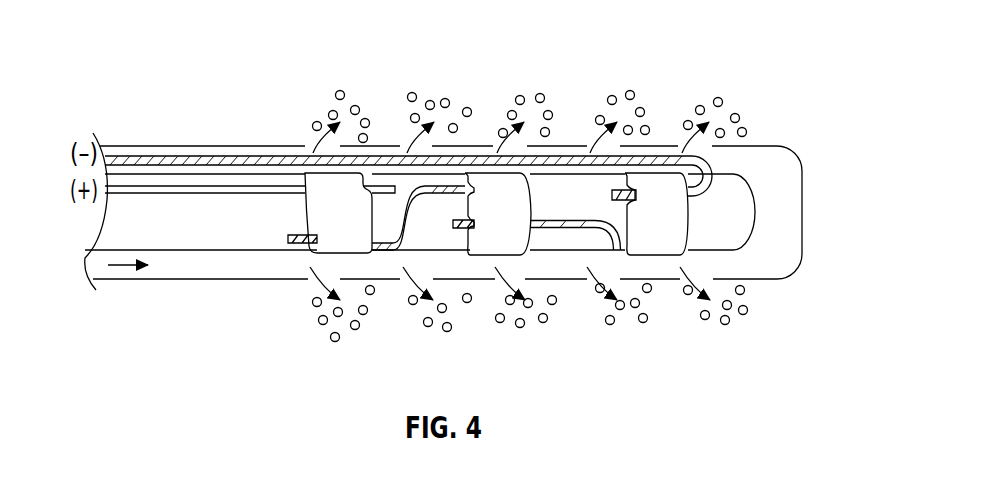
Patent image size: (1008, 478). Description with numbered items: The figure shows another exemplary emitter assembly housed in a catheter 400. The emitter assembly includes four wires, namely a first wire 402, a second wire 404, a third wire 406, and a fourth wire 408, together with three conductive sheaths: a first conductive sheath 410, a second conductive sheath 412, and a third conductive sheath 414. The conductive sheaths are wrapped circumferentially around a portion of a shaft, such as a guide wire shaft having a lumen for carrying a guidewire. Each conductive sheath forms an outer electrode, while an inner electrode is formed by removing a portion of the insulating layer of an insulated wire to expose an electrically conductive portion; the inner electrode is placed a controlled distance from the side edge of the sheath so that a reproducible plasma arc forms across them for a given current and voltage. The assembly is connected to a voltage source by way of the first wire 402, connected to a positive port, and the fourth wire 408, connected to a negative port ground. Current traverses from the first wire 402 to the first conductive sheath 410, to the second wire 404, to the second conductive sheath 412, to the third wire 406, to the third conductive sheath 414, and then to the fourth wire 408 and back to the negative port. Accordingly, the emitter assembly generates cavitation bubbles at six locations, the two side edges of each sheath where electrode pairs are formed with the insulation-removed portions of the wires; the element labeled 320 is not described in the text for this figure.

The outer housing 320 is at (755, 215).
The catheter 400 is at (764, 31).
The first wire 402 is at (175, 193).
The second wire 404 is at (375, 252).
The third wire 406 is at (560, 228).
The fourth wire 408 is at (183, 156).
The first conductive sheath 410 is at (363, 232).
The second conductive sheath 412 is at (485, 232).
The third conductive sheath 414 is at (683, 232).